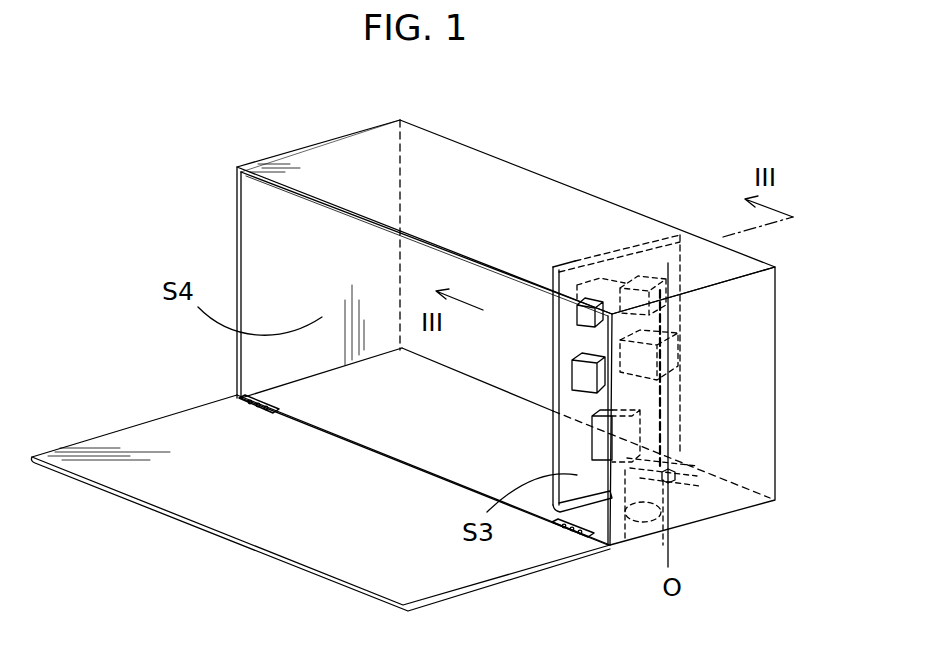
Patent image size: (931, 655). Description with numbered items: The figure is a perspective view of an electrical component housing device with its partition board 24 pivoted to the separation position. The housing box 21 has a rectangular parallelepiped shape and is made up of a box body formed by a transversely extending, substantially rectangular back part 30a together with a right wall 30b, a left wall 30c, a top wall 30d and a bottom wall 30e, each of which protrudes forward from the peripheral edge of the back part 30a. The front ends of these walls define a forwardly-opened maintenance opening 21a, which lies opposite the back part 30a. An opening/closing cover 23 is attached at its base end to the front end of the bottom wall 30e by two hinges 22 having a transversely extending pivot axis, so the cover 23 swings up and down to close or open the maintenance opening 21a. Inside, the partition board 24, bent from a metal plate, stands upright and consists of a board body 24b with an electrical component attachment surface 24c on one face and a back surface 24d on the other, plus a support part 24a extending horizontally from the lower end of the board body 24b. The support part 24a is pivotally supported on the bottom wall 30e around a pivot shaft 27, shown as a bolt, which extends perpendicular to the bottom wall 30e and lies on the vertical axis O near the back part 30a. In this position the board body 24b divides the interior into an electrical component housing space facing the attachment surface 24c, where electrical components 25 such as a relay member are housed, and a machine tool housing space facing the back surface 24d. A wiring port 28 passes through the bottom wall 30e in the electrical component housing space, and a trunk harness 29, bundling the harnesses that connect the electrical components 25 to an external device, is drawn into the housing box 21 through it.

The housing box 21 is at (496, 310).
The maintenance opening 21a is at (358, 243).
The hinges 22 is at (250, 410).
The opening/closing cover 23 is at (233, 543).
The partition board 24 is at (575, 374).
The support part 24a is at (598, 512).
The board body 24b is at (552, 387).
The electrical component attachment surface 24c is at (575, 318).
The back surface 24d is at (652, 237).
The electrical components 25 is at (603, 293).
The pivot shaft 27 is at (680, 462).
The wiring port 28 is at (633, 517).
The trunk harness 29 is at (688, 455).
The back part 30a is at (495, 367).
The right wall 30b is at (260, 206).
The left wall 30c is at (745, 395).
The top wall 30d is at (463, 166).
The bottom wall 30e is at (348, 432).